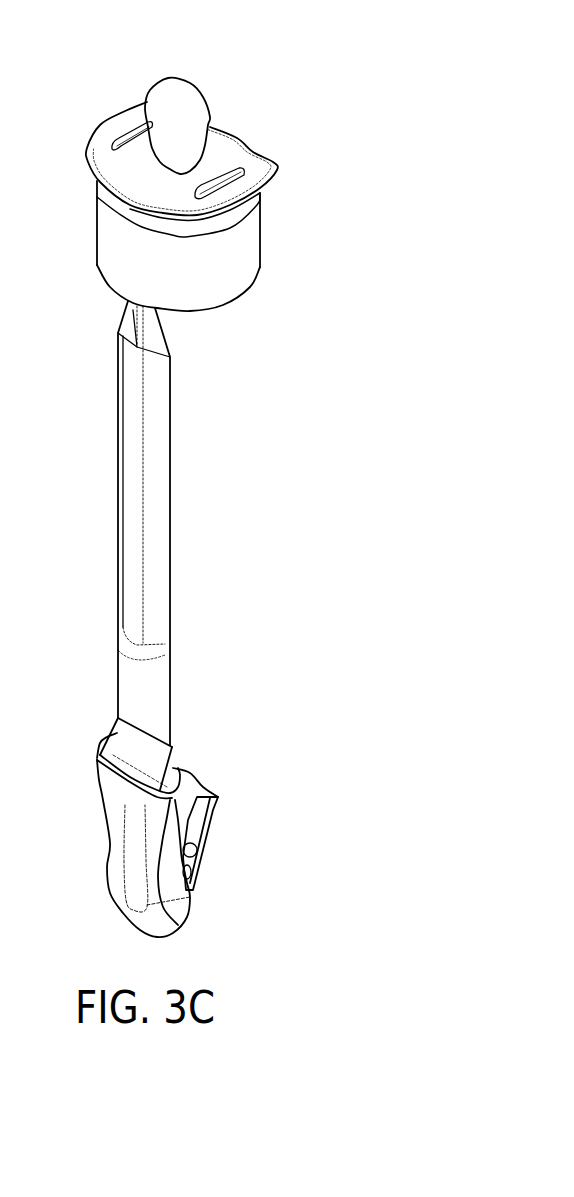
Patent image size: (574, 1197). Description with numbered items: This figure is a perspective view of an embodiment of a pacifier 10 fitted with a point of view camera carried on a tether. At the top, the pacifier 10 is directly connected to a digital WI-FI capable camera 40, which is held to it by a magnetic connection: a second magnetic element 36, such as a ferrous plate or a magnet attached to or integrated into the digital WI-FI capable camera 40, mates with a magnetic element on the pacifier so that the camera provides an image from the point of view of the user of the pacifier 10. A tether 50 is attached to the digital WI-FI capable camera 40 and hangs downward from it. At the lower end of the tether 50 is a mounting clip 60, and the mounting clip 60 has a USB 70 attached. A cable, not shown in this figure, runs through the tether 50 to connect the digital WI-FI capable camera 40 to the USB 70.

The pacifier 10 is at (257, 168).
The second magnetic element 36 is at (146, 210).
The digital WI-FI capable camera 40 is at (110, 248).
The tether 50 is at (163, 487).
The mounting clip 60 is at (120, 850).
The USB 70 is at (203, 840).